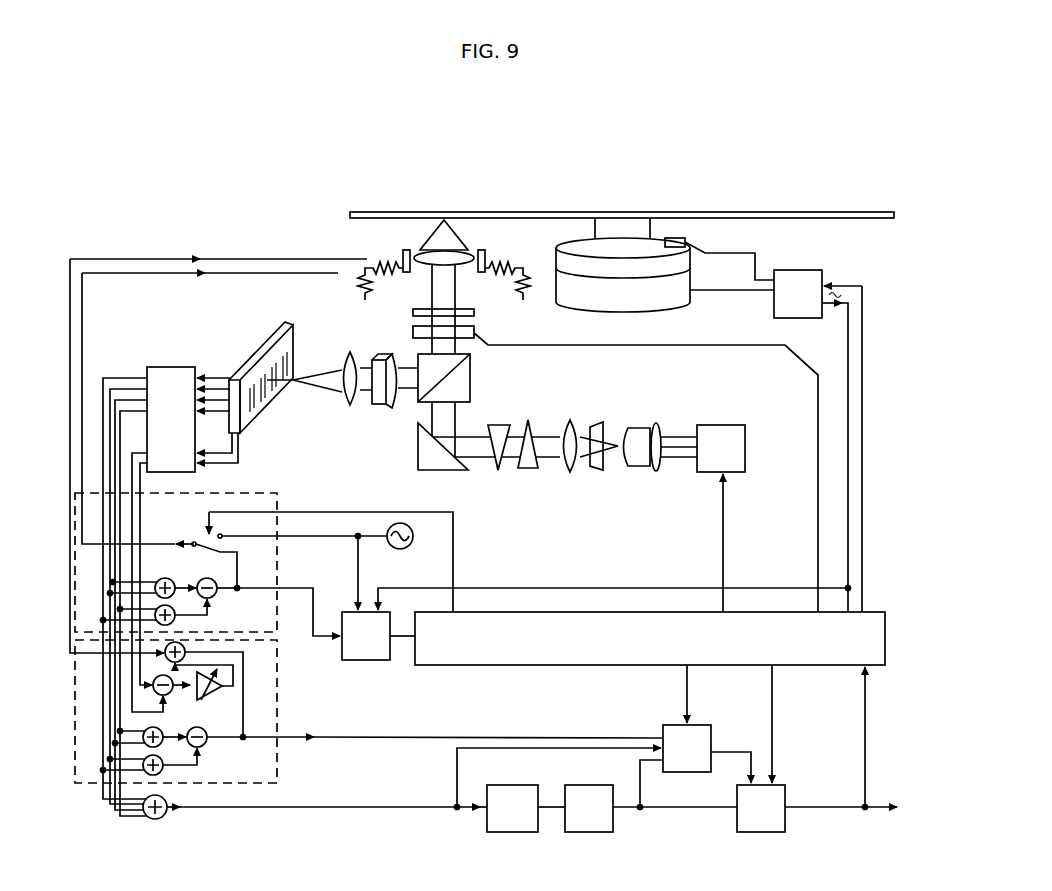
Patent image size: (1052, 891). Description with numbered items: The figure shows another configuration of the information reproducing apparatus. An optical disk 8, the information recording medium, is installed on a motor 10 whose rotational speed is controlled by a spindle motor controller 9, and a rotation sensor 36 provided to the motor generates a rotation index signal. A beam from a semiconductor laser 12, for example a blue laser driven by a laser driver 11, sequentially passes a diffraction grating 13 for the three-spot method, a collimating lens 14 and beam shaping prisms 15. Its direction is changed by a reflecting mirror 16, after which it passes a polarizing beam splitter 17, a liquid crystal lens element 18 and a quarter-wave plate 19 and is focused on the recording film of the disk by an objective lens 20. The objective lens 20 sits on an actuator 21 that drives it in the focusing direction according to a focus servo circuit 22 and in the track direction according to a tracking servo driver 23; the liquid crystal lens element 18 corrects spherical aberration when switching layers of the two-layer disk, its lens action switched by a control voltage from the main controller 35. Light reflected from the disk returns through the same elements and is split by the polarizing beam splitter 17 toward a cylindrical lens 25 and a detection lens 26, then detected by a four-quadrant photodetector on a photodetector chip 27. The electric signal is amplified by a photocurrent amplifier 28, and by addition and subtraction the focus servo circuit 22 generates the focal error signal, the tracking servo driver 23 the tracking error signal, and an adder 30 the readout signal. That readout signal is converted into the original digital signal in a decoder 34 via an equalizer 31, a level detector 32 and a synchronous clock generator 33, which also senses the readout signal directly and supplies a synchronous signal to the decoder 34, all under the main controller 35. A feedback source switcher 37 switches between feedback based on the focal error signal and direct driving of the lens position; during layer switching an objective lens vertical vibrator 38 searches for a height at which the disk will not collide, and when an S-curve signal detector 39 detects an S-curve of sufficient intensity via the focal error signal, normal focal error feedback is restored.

The optical disk 8 is at (622, 231).
The spindle motor controller 9 is at (620, 441).
The motor 10 is at (665, 265).
The laser driver 11 is at (721, 518).
The semiconductor laser 12 is at (661, 460).
The diffraction grating 13 is at (603, 423).
The collimating lens 14 is at (569, 462).
The beam shaping prisms 15 is at (513, 459).
The reflecting mirror 16 is at (472, 450).
The polarizing beam splitter 17 is at (450, 378).
The liquid crystal lens element 18 is at (615, 469).
The quarter-wave plate 19 is at (474, 313).
The objective lens 20 is at (434, 242).
The actuator 21 is at (444, 276).
The focus servo circuit 22 is at (183, 551).
The tracking servo driver 23 is at (194, 711).
The cylindrical lens 25 is at (385, 394).
The detection lens 26 is at (354, 393).
The photodetector chip 27 is at (269, 392).
The photocurrent amplifier 28 is at (188, 419).
The adder 30 is at (315, 817).
The equalizer 31 is at (526, 808).
The level detector 32 is at (651, 796).
The synchronous clock generator 33 is at (707, 754).
The decoder 34 is at (817, 808).
The main controller 35 is at (650, 709).
The rotation sensor 36 is at (719, 252).
The feedback source switcher 37 is at (310, 561).
The objective lens vertical vibrator 38 is at (329, 566).
The S-curve signal detector 39 is at (326, 624).